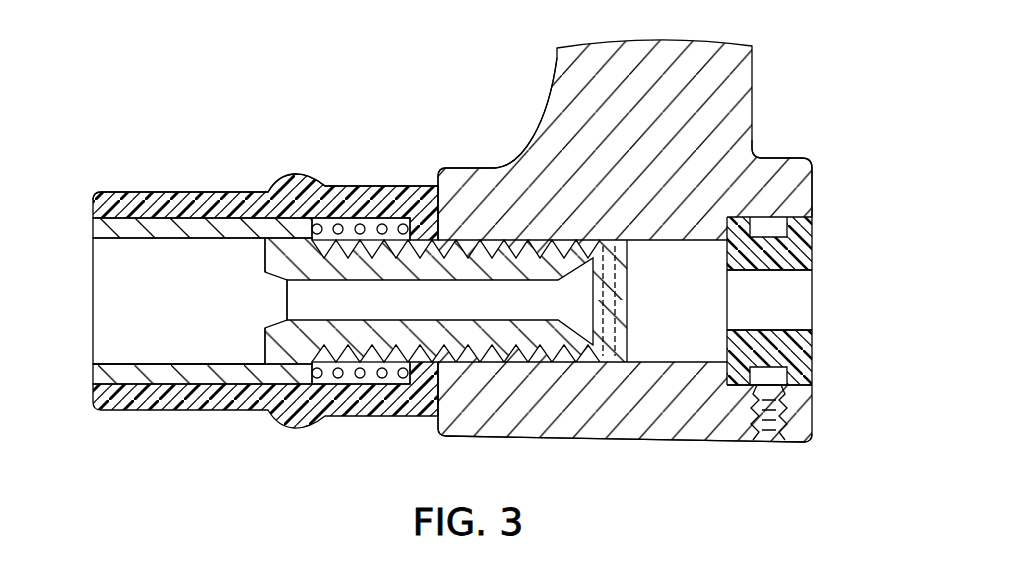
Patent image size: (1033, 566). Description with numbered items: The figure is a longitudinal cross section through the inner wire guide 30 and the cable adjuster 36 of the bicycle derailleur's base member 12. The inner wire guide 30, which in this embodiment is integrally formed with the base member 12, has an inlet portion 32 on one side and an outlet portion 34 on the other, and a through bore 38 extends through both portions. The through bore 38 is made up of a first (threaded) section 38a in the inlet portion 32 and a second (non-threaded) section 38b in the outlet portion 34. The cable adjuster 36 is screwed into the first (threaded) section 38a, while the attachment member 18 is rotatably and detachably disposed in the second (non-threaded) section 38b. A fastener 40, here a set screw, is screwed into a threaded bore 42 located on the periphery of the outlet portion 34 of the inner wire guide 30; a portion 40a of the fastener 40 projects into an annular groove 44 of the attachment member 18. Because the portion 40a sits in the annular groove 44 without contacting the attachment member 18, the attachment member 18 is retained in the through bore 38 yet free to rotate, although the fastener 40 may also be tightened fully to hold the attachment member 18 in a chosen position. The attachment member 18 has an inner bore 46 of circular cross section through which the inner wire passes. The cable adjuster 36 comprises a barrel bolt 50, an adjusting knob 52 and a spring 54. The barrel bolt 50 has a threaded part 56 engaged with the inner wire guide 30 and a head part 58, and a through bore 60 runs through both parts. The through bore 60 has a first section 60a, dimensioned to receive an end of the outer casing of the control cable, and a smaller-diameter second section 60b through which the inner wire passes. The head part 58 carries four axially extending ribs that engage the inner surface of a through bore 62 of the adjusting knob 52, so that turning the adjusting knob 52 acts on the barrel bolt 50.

The base member 12 is at (552, 76).
The attachment member 18 is at (818, 246).
The inner wire guide 30 is at (612, 446).
The inlet portion 32 is at (473, 168).
The outlet portion 34 is at (800, 158).
The cable adjuster 36 is at (243, 186).
The through bore 38 is at (685, 366).
The first (threaded) section 38a is at (497, 238).
The second (non-threaded) section 38b is at (808, 383).
The fastener 40 is at (745, 428).
The portion of the fastener 40a is at (757, 367).
The threaded bore 42 is at (785, 428).
The annular groove 44 is at (770, 217).
The inner bore 46 is at (795, 274).
The barrel bolt 50 is at (142, 392).
The adjusting knob 52 is at (126, 188).
The spring 54 is at (333, 228).
The threaded part 56 is at (533, 366).
The head part 58 is at (197, 394).
The through bore 60 is at (122, 275).
The first section 60a is at (197, 360).
The second section 60b is at (298, 305).
The through bore 62 is at (209, 228).